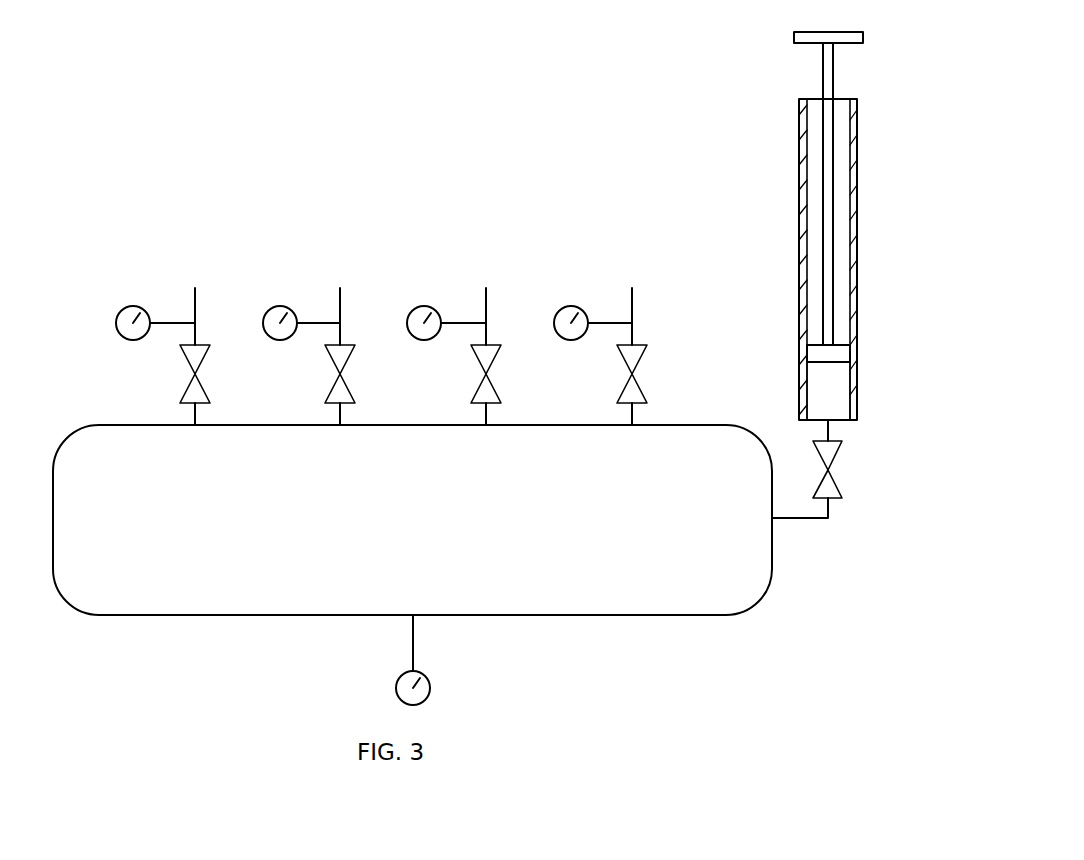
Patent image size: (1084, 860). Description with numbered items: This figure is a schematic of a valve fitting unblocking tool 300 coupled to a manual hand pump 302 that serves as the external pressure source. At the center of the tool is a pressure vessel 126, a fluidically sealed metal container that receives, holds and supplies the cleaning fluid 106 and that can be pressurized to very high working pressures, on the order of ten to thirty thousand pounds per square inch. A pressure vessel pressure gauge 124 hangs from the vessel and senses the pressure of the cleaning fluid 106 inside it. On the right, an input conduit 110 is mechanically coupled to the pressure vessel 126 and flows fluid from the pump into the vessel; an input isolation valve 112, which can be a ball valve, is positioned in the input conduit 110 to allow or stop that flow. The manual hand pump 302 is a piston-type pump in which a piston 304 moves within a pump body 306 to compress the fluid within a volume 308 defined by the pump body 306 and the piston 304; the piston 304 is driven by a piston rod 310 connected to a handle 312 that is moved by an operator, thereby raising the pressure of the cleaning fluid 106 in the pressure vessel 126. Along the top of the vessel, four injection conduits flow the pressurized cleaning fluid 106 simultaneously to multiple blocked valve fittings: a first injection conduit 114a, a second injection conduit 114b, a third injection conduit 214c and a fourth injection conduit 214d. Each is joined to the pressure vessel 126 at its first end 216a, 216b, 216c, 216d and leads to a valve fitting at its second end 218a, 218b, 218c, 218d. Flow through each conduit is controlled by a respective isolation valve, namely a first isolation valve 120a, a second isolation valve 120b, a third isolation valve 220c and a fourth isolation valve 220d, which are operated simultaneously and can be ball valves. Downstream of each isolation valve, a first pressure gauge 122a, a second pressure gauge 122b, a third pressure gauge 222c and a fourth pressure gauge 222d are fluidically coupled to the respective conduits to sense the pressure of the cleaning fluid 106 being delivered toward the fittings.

The system 300 is at (232, 192).
The cleaning fluid 106 is at (435, 534).
The input conduit 110 is at (832, 430).
The input isolation valve 112 is at (838, 482).
The first injection conduit 114a is at (193, 300).
The second injection conduit 114b is at (338, 300).
The first isolation valve 120a is at (182, 386).
The second isolation valve 120b is at (353, 386).
The first pressure gauge 122a is at (117, 323).
The second pressure gauge 122b is at (280, 341).
The pressure vessel pressure gauge 124 is at (395, 685).
The pressure vessel 126 is at (268, 622).
The third injection conduit 214c is at (488, 300).
The fourth injection conduit 214d is at (635, 300).
The first end 216a is at (193, 430).
The first end 216b is at (340, 430).
The first end 216c is at (486, 430).
The first end 216d is at (632, 430).
The second end 218a is at (193, 286).
The second end 218b is at (340, 286).
The second end 218c is at (486, 286).
The second end 218d is at (632, 286).
The third isolation valve 220c is at (499, 386).
The fourth isolation valve 220d is at (645, 386).
The third pressure gauge 222c is at (422, 306).
The fourth pressure gauge 222d is at (571, 306).
The manual hand pump 302 is at (838, 210).
The piston 304 is at (845, 337).
The pump body 306 is at (798, 145).
The volume 308 is at (846, 380).
The piston rod 310 is at (835, 70).
The handle 312 is at (843, 32).